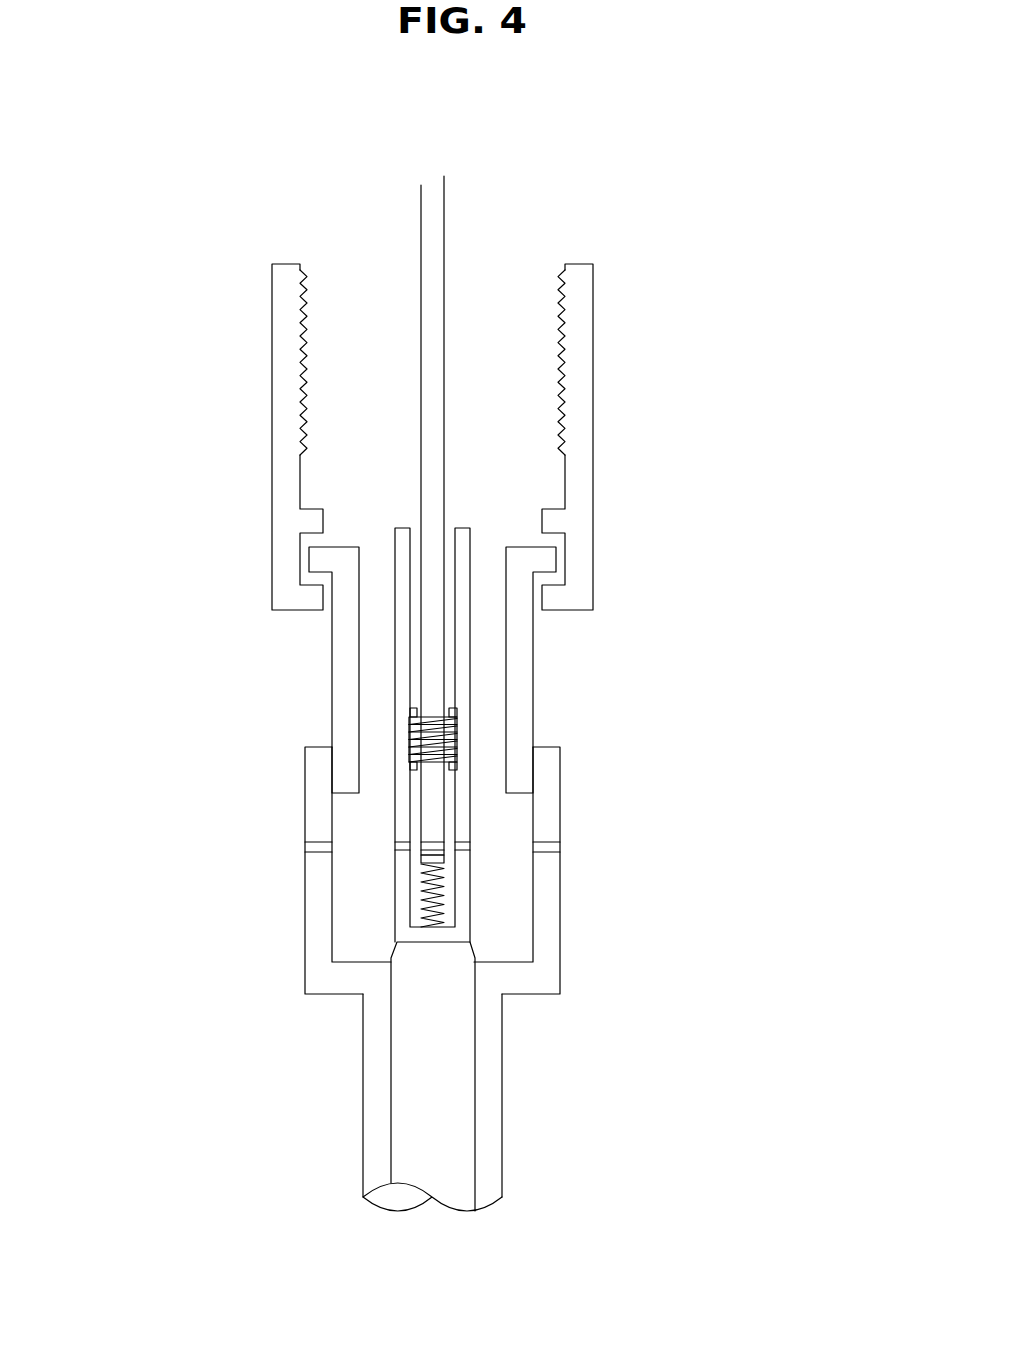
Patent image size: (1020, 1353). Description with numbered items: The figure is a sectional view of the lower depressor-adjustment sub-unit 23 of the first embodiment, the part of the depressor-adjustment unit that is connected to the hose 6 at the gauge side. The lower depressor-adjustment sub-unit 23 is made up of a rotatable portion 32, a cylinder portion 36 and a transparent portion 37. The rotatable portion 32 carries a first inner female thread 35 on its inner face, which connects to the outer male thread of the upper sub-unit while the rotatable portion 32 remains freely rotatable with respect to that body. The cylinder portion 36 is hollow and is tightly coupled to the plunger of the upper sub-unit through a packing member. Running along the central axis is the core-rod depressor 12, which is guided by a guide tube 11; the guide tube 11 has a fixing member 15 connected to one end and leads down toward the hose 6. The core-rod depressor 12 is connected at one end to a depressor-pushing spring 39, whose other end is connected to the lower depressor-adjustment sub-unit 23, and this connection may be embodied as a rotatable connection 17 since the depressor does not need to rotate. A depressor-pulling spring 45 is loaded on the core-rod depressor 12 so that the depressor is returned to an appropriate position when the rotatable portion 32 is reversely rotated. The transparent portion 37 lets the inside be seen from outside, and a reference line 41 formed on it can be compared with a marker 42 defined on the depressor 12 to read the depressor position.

The hose 6 is at (552, 1085).
The guide tube 11 is at (383, 627).
The core-rod depressor 12 is at (468, 183).
The fixing member 15 is at (478, 948).
The rotatable connection 17 is at (415, 865).
The lower depressor-adjustment sub-unit 23 is at (190, 794).
The rotatable portion 32 is at (642, 380).
The first inner female thread 35 is at (568, 313).
The cylinder portion 36 is at (567, 675).
The transparent portion 37 is at (583, 890).
The depressor-pushing spring 39 is at (415, 890).
The reference line 41 is at (570, 847).
The marker 42 is at (415, 847).
The depressor-pulling spring 45 is at (402, 730).